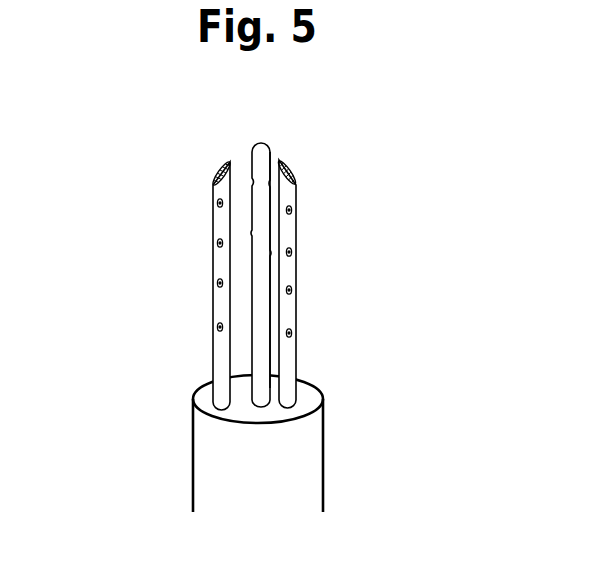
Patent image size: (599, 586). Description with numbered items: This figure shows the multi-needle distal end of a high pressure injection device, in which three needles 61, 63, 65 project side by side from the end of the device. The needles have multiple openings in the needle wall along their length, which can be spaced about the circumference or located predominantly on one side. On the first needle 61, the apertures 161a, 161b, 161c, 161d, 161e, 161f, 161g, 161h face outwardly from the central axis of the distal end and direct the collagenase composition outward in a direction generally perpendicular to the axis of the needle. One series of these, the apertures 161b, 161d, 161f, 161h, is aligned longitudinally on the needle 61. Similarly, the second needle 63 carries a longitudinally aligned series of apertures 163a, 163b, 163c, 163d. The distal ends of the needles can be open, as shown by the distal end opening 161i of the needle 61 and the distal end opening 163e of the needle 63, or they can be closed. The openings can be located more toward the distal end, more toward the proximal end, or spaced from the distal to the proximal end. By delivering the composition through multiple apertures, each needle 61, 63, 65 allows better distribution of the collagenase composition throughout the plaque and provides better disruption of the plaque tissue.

The needle 61 is at (219, 372).
The needle 63 is at (290, 355).
The needle 65 is at (258, 163).
The aperture 161a is at (213, 345).
The aperture 161b is at (217, 327).
The aperture 161c is at (213, 305).
The aperture 161d is at (217, 283).
The aperture 161e is at (213, 260).
The aperture 161f is at (217, 243).
The aperture 161g is at (213, 223).
The aperture 161h is at (217, 203).
The distal end opening 161i is at (214, 172).
The aperture 163a is at (292, 333).
The aperture 163b is at (292, 290).
The aperture 163c is at (292, 252).
The aperture 163d is at (292, 210).
The distal end opening 163e is at (292, 166).